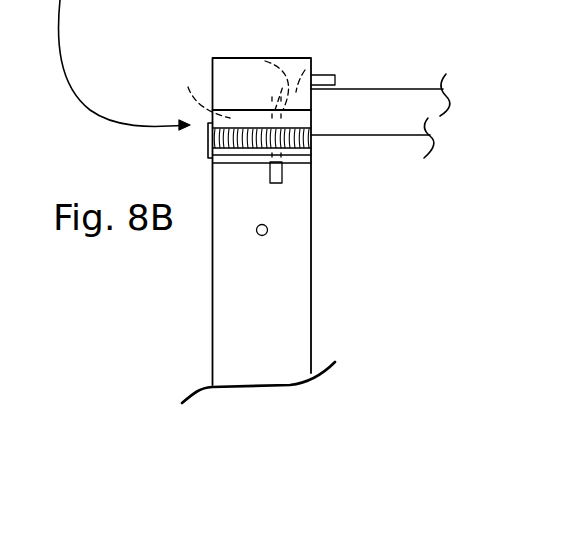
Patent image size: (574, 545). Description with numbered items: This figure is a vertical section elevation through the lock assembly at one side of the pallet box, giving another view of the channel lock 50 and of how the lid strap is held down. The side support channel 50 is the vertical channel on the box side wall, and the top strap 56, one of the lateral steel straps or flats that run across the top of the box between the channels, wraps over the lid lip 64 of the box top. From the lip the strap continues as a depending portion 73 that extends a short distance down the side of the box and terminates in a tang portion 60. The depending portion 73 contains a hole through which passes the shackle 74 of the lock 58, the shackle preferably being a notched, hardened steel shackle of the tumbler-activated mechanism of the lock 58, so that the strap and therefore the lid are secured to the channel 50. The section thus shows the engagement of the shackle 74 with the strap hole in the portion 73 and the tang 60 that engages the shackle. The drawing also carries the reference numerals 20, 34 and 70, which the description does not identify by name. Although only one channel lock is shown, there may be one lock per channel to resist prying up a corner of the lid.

The electrical connector assembly 20 is at (380, 291).
The housing 34 is at (207, 0).
The side support channel 50 is at (290, 207).
The top strap 56 is at (335, 83).
The lock 58 is at (210, 158).
The tang portion 60 is at (277, 172).
The lid lip 64 is at (330, 127).
The pivot pin 70 is at (267, 228).
The depending portion 73 is at (267, 54).
The shackle 74 is at (205, 93).